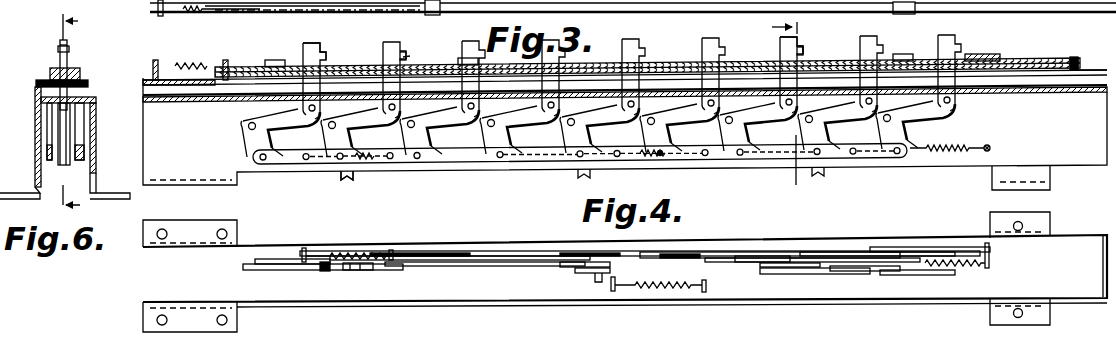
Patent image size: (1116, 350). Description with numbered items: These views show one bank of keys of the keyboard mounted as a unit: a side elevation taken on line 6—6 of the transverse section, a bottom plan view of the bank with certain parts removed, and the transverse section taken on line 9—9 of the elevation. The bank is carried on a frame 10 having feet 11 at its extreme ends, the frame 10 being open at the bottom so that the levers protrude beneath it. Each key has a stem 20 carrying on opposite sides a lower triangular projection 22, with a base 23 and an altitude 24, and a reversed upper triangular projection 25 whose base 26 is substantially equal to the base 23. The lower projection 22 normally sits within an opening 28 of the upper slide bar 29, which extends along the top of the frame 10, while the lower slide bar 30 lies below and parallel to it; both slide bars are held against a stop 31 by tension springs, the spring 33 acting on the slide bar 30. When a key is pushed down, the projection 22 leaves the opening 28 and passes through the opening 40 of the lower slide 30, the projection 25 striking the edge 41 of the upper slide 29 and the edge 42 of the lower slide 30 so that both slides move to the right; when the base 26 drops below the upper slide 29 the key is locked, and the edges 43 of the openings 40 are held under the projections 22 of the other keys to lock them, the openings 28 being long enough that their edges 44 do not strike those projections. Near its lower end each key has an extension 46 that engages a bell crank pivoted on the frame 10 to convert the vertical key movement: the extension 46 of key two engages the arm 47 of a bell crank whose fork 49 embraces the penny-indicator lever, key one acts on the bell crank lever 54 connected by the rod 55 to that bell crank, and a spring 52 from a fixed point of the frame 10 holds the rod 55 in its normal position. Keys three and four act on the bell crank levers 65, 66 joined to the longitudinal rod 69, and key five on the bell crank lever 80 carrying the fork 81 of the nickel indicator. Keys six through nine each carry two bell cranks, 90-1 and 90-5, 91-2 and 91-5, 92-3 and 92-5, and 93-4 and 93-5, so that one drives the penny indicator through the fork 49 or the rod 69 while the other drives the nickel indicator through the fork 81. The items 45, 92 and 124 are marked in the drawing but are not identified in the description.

In FIG. 6, the section line 6— 6 is at (76, 112).
In FIG. 3, the section line 9— 9 is at (784, 108).
In FIG. 6, the frame 10 is at (96, 143).
In FIG. 3, the frame 10 is at (625, 131).
In FIG. 4, the frame 10 is at (625, 271).
In FIG. 6, the feet 11 is at (96, 192).
In FIG. 3, the feet 11 is at (1000, 188).
In FIG. 4, the feet 11 is at (240, 228).
In FIG. 6, the stem 20 is at (68, 51).
In FIG. 3, the stem 20 is at (700, 60).
In FIG. 6, the lower triangular projection 22 is at (80, 73).
In FIG. 3, the lower triangular projection 22 is at (385, 72).
In FIG. 3, the base 23 is at (302, 72).
In FIG. 3, the altitude 24 is at (778, 70).
In FIG. 3, the upper triangular projection 25 is at (470, 57).
In FIG. 3, the base 26 is at (405, 55).
In FIG. 3, the opening 28 is at (612, 62).
In FIG. 6, the upper slide bar 29 is at (60, 68).
In FIG. 3, the upper slide bar 29 is at (1081, 52).
In FIG. 6, the lower slide bar 30 is at (50, 76).
In FIG. 3, the lower slide bar 30 is at (1078, 69).
In FIG. 3, the stop 31 is at (212, 80).
In FIG. 3, the spring 33 is at (195, 63).
In FIG. 3, the opening 40 is at (682, 116).
In FIG. 3, the edge 41 is at (326, 48).
In FIG. 3, the edge 42 is at (443, 119).
In FIG. 3, the edges 43 is at (602, 117).
In FIG. 3, the edges 44 is at (735, 75).
In FIG. 3, the stop 45 is at (998, 57).
In FIG. 6, the extension 46 is at (92, 100).
In FIG. 3, the extension 46 is at (363, 120).
In FIG. 4, the arm 47 is at (372, 272).
In FIG. 3, the fork 49 is at (349, 186).
In FIG. 4, the fork 49 is at (338, 272).
In FIG. 4, the spring 52 is at (357, 250).
In FIG. 4, the bell crank lever 54 is at (283, 272).
In FIG. 4, the rod 55 is at (450, 268).
In FIG. 4, the bell crank lever 65 is at (452, 256).
In FIG. 4, the bell crank lever 66 is at (525, 251).
In FIG. 4, the rod 69 is at (752, 256).
In FIG. 4, the bell crank lever 80 is at (596, 280).
In FIG. 3, the fork 81 is at (578, 178).
In FIG. 4, the fork 81 is at (563, 270).
In FIG. 4, the bell crank lever 90-1 is at (688, 252).
In FIG. 4, the bell crank lever 90-5 is at (757, 283).
In FIG. 4, the bell crank lever 91-2 is at (780, 258).
In FIG. 4, the bell crank lever 91-5 is at (802, 276).
In FIG. 4, the slide 92 is at (775, 286).
In FIG. 4, the bell crank lever 92-3 is at (850, 258).
In FIG. 4, the bell crank lever 92-5 is at (860, 274).
In FIG. 4, the bell crank lever 93-4 is at (935, 250).
In FIG. 4, the bell crank lever 93-5 is at (927, 278).
In FIG. 3, the rail 124 is at (590, 12).